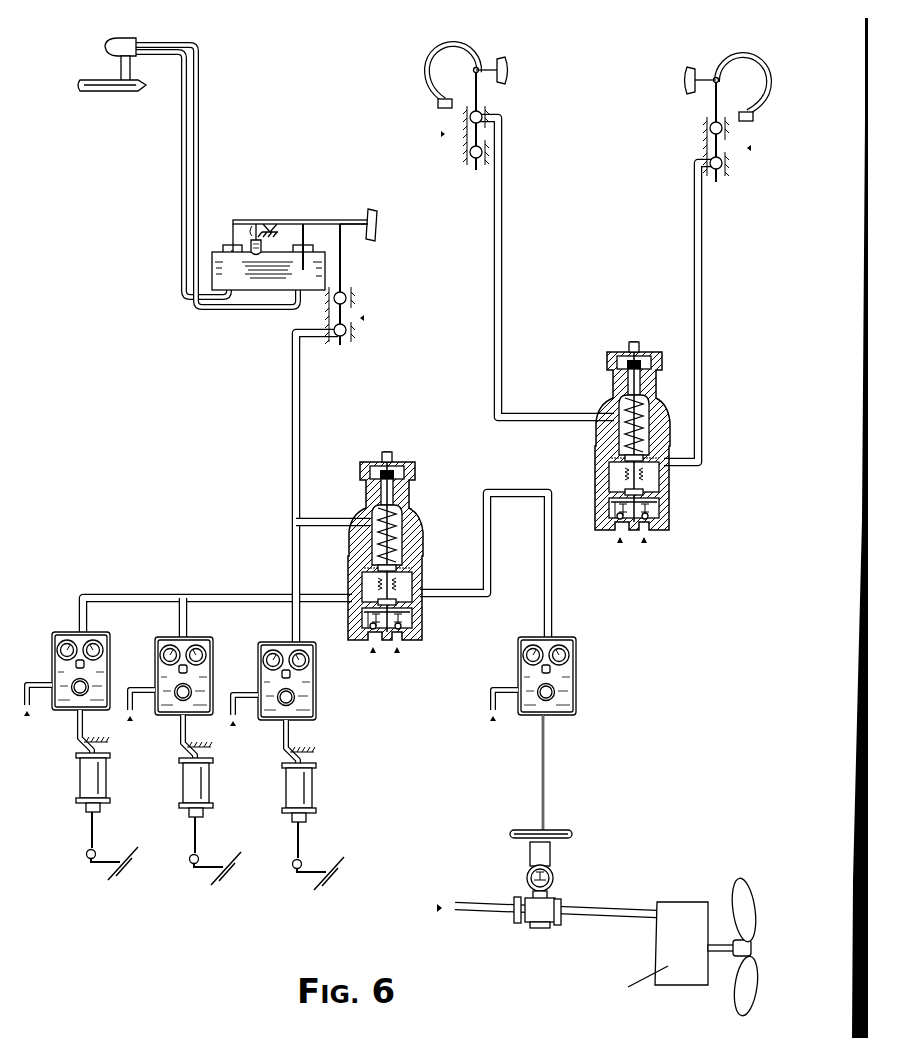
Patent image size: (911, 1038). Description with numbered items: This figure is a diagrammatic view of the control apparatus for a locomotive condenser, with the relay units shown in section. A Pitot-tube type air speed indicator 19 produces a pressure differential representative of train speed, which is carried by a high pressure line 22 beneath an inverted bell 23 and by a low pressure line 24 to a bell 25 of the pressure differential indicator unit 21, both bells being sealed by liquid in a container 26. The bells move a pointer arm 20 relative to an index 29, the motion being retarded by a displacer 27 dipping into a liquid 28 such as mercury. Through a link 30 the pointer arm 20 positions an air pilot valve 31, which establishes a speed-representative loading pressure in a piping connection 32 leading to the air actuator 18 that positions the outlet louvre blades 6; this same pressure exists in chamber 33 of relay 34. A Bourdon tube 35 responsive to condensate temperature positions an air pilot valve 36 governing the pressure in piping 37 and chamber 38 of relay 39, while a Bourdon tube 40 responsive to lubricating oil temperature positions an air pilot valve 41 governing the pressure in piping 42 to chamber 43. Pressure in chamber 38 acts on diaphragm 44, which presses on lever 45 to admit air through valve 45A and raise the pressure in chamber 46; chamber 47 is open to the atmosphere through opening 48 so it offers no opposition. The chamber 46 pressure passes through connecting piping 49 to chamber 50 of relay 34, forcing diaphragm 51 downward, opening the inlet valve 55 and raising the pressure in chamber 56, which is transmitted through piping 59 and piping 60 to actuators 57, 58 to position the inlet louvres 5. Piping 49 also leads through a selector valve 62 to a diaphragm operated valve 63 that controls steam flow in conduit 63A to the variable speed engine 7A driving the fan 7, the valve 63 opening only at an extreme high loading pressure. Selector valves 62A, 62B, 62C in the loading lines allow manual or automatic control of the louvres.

The air speed indicator 19 is at (116, 38).
The high pressure line 22 is at (202, 135).
The low pressure line 24 is at (178, 135).
The pointer arm 20 is at (286, 218).
The pressure differential indicator unit 21 is at (217, 243).
The inverted bell 23 is at (245, 275).
The bell 25 is at (306, 222).
The container 26 is at (300, 290).
The displacer 27 is at (252, 238).
The liquid 28 is at (248, 243).
The index 29 is at (374, 212).
The link 30 is at (344, 272).
The air pilot valve 31 is at (392, 307).
The piping connection 32 is at (301, 420).
The Bourdon tube 35 is at (440, 45).
The air pilot valve 36 is at (454, 164).
The piping 37 is at (503, 240).
The Bourdon tube 40 is at (726, 58).
The air pilot valve 41 is at (764, 178).
The piping 42 is at (702, 255).
The relay 34 is at (382, 559).
The chamber 33 is at (400, 550).
The chamber 50 is at (412, 582).
The diaphragm 51 is at (412, 612).
The inlet valve 55 is at (368, 648).
The chamber 56 is at (350, 610).
The relay 39 is at (632, 450).
The chamber 38 is at (608, 425).
The chamber 43 is at (661, 474).
The diaphragm 44 is at (672, 442).
The lever 45 is at (602, 513).
The valve 45A is at (603, 547).
The chamber 46 is at (661, 514).
The chamber 47 is at (670, 496).
The opening 48 is at (594, 474).
The connecting piping 49 is at (515, 490).
The piping 59 is at (132, 592).
The piping 60 is at (180, 618).
The selector valve 62 is at (612, 686).
The selector valve 62A is at (56, 712).
The selector valve 62B is at (165, 717).
The selector valve 62C is at (318, 722).
The actuator 58 is at (108, 776).
The actuator 57 is at (213, 782).
The air actuator 18 is at (318, 788).
The inlet louvres 5 is at (116, 880).
The outlet louvre blades 6 is at (324, 890).
The diaphragm operated valve 63 is at (560, 830).
The conduit 63A is at (601, 914).
The variable speed engine 7A is at (671, 902).
The fan 7 is at (748, 878).